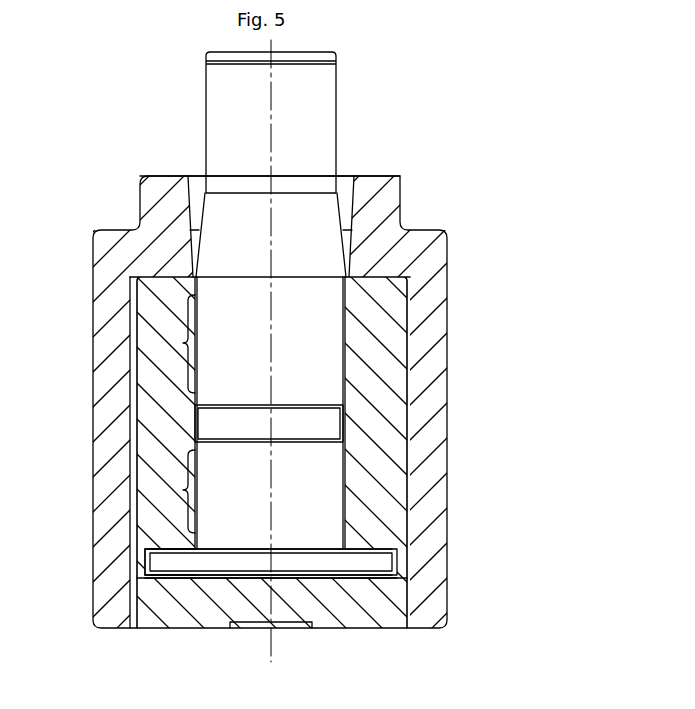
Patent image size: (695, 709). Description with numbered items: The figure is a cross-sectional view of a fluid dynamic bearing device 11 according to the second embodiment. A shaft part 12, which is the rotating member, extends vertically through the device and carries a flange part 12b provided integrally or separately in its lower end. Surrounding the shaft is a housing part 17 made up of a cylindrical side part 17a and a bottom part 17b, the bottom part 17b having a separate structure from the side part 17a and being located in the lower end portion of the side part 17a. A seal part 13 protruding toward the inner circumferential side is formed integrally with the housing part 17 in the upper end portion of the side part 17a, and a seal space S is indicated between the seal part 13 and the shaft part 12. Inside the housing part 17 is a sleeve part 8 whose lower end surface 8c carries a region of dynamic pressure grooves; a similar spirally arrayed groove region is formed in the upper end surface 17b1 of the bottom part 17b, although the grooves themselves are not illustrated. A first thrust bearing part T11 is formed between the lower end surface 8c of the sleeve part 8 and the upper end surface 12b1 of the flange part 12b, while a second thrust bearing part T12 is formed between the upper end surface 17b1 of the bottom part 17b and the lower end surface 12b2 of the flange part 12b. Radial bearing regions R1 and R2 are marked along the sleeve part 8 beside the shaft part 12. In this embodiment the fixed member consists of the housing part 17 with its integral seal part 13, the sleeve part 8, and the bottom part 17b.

The fluid dynamic bearing device 11 is at (555, 172).
The sleeve part 8 is at (412, 312).
The lower end surface of the sleeve part 8c is at (173, 560).
The shaft part 12 is at (330, 364).
The flange part 12b is at (380, 560).
The upper end surface of the flange part 12b1 is at (370, 547).
The lower end surface of the flange part 12b2 is at (365, 577).
The seal part 13 is at (168, 235).
The seal space S is at (196, 215).
The housing part 17 is at (347, 354).
The side part 17a is at (105, 415).
The bottom part 17b is at (320, 605).
The upper end surface of the bottom part 17b1 is at (207, 568).
The first radial bearing portion R1 is at (186, 345).
The second radial bearing portion R2 is at (186, 490).
The first thrust bearing part T11 is at (167, 548).
The second thrust bearing part T12 is at (181, 580).